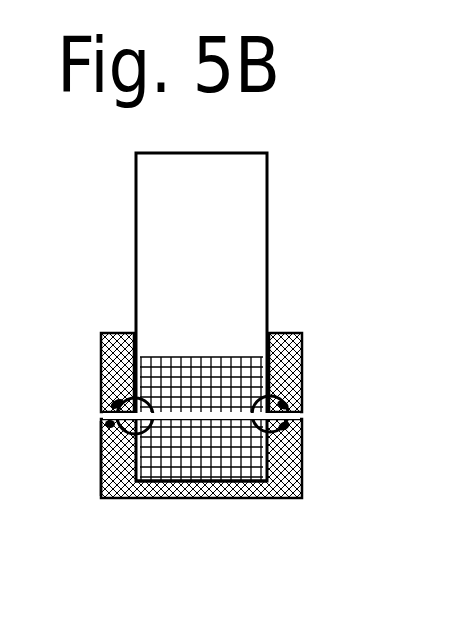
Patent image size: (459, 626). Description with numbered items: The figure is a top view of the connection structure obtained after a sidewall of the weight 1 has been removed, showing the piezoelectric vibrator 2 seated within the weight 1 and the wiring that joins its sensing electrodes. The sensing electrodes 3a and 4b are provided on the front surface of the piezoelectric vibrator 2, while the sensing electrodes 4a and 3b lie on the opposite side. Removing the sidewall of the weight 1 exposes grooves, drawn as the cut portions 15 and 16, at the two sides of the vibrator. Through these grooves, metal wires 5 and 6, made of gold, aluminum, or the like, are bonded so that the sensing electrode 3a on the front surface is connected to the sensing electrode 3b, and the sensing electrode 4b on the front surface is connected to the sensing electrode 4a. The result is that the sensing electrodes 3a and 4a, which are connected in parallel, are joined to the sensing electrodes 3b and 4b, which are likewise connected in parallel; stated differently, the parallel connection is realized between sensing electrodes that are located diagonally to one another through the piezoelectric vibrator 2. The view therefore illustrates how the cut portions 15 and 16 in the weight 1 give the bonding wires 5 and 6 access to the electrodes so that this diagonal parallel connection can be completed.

The weight 1 is at (255, 245).
The piezoelectric vibrator 2 is at (247, 482).
The sensing electrode 3a is at (203, 365).
The sensing electrode 3b is at (303, 345).
The sensing electrode 4a is at (100, 489).
The sensing electrode 4b is at (205, 466).
The metal wire 5 is at (292, 403).
The metal wire 6 is at (100, 439).
The cut portion 15 is at (290, 431).
The cut portion 16 is at (120, 398).